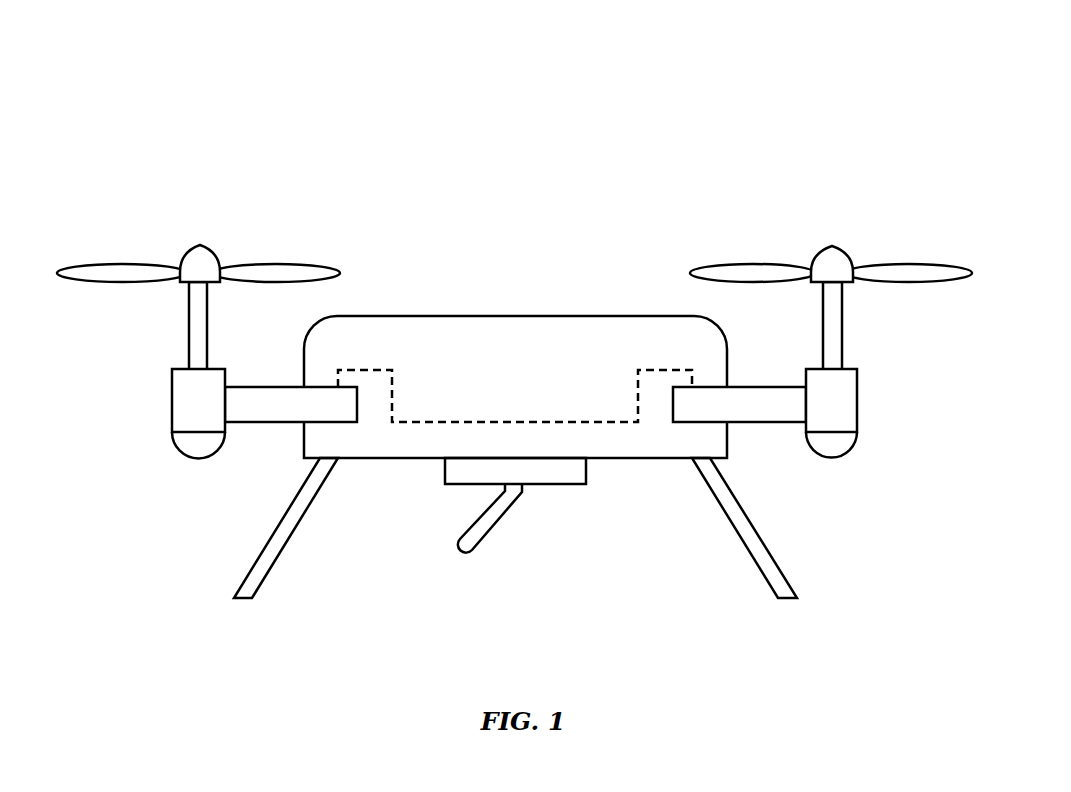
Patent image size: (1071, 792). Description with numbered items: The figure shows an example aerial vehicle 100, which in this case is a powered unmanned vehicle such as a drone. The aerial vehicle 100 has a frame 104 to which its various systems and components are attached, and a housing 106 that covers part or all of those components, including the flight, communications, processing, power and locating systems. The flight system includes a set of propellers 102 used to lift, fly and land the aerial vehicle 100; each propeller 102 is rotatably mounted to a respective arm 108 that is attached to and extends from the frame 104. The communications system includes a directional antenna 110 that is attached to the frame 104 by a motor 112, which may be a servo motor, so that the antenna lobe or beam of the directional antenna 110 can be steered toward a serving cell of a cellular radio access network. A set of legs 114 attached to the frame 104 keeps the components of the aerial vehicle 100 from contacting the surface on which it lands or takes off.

The aerial vehicle 100 is at (288, 53).
The propellers 102 is at (275, 263).
The frame 104 is at (573, 422).
The housing 106 is at (485, 317).
The arm 108 is at (270, 385).
The directional antenna 110 is at (488, 528).
The motor 112 is at (586, 477).
The set of legs 114 is at (287, 547).